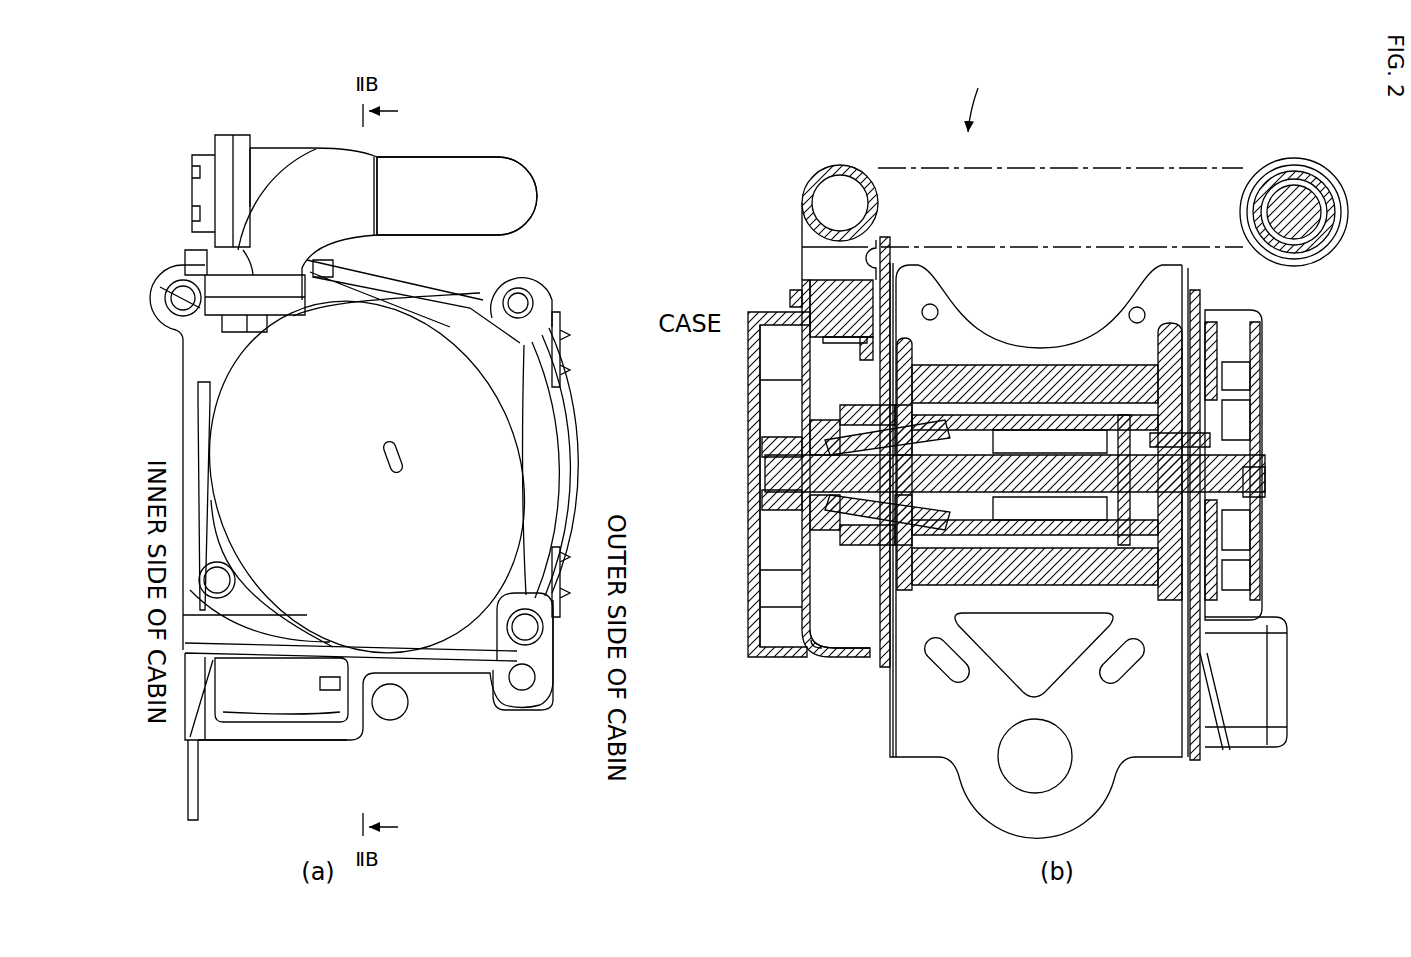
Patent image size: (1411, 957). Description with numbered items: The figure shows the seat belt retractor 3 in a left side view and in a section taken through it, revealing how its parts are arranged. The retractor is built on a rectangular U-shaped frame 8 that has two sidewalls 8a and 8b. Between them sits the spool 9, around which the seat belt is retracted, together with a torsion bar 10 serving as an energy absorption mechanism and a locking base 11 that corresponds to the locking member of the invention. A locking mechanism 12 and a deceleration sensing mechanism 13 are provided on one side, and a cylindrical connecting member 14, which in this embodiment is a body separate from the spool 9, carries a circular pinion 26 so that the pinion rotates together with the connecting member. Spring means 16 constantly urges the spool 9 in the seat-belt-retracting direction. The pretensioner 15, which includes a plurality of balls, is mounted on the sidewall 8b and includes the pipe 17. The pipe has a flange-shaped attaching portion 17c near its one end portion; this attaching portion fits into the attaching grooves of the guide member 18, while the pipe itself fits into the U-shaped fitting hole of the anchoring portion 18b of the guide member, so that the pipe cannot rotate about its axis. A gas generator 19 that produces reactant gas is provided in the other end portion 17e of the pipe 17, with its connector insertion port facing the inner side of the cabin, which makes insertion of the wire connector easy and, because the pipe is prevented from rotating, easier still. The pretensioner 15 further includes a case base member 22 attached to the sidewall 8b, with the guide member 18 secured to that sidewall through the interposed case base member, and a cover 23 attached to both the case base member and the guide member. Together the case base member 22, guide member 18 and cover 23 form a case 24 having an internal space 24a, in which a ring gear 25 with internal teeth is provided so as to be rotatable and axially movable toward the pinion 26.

The seat belt retractor 3 is at (530, 142).
The frame 8 is at (192, 768).
The sidewall 8a is at (298, 730).
The sidewall 8b is at (472, 652).
The spool 9 is at (1030, 368).
The torsion bar 10 is at (1058, 497).
The locking base 11 is at (1147, 560).
The locking mechanism 12 is at (1258, 378).
The deceleration sensing mechanism 13 is at (1290, 682).
The connecting member 14 is at (915, 420).
The pretensioner 15 is at (198, 370).
The spring means 16 is at (333, 531).
The pipe 17 is at (470, 163).
The attaching portion 17c is at (190, 298).
The another end portion 17e is at (283, 160).
The guide member 18 is at (808, 280).
The anchoring portion 18b is at (225, 243).
The gas generator 19 is at (207, 152).
The case base member 22 is at (878, 255).
The cover 23 is at (556, 458).
The case 24 is at (805, 296).
The internal space 24a is at (855, 642).
The ring gear 25 is at (762, 386).
The pinion 26 is at (773, 468).